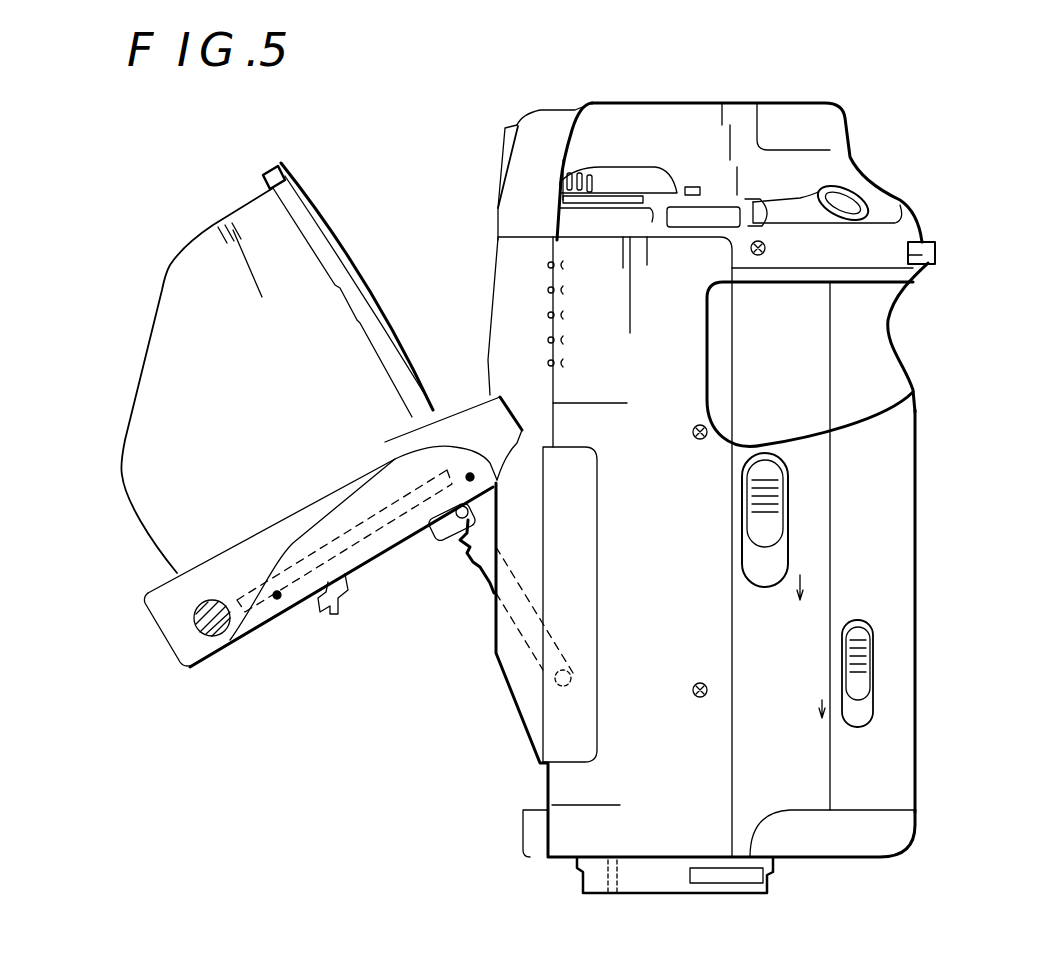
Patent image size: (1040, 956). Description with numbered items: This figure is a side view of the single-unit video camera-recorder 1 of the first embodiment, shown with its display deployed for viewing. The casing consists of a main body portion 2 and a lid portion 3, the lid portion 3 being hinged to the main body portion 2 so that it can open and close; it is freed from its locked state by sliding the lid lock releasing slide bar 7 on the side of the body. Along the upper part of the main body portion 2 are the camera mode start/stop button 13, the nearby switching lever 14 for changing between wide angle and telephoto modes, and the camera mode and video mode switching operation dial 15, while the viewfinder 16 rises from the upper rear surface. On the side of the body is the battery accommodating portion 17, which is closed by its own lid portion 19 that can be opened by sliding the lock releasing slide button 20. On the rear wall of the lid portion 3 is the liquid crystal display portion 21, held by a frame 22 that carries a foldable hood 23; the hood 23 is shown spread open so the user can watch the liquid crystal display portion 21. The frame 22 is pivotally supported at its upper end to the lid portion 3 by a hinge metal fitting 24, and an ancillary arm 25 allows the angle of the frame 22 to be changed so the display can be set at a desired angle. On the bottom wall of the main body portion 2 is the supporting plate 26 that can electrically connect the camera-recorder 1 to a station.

The single-unit video camera-recorder 1 is at (936, 214).
The main body portion 2 is at (866, 351).
The lid portion 3 is at (588, 299).
The lid lock releasing slide bar 7 is at (776, 496).
The camera mode start/stop button 13 is at (852, 207).
The switching lever 14 is at (936, 254).
The camera mode and video mode switching operation dial 15 is at (640, 188).
The viewfinder 16 is at (505, 158).
The battery accommodating portion 17 is at (918, 621).
The lid portion 19 is at (900, 569).
The lock releasing slide button 20 is at (870, 659).
The liquid crystal display portion 21 is at (383, 490).
The frame 22 is at (302, 503).
The hood 23 is at (160, 369).
The hinge metal fitting 24 is at (430, 528).
The ancillary arm 25 is at (472, 579).
The supporting plate 26 is at (660, 876).